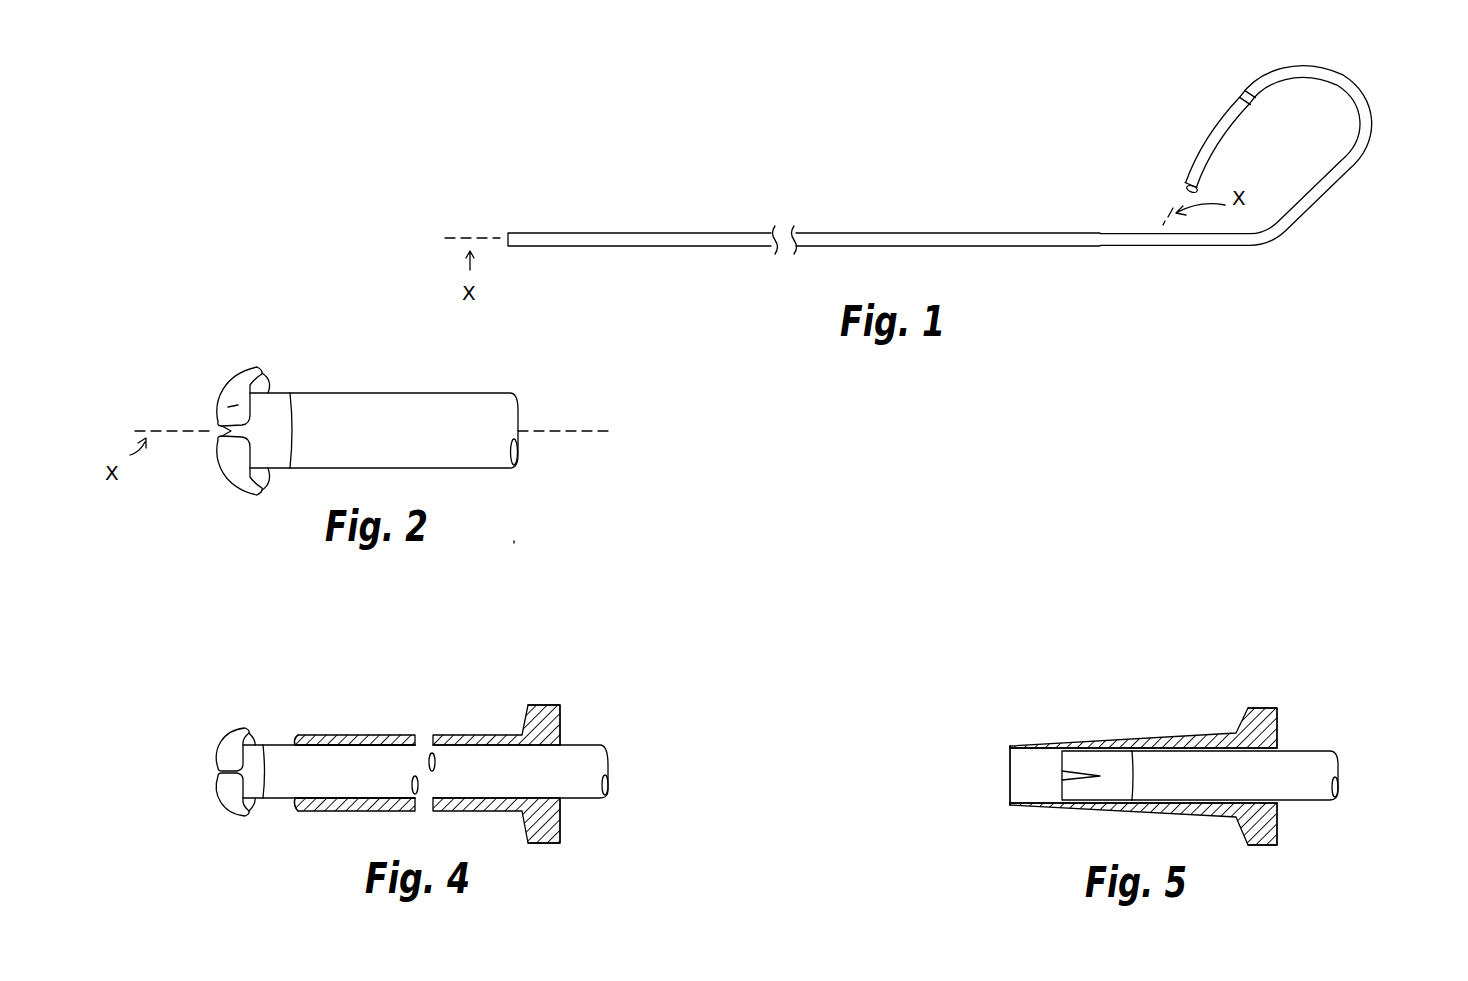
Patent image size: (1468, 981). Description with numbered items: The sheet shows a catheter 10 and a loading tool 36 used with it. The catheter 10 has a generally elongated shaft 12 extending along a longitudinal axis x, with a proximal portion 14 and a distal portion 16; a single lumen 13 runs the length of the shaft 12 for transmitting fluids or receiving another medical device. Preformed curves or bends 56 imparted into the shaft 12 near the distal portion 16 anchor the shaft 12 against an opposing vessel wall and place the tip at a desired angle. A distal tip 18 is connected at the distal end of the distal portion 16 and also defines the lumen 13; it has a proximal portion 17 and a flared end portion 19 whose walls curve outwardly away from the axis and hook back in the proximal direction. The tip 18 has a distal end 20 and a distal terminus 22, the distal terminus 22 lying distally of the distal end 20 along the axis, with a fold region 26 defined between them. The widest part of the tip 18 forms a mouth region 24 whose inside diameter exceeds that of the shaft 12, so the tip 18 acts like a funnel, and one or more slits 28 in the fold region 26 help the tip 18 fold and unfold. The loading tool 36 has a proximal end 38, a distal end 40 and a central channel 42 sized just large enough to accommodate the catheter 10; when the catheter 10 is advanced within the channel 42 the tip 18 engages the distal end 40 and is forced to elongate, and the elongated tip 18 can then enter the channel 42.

In FIG. 1, the catheter 10 is at (828, 132).
In FIG. 4, the catheter 10 is at (615, 742).
In FIG. 5, the catheter 10 is at (1333, 735).
In FIG. 1, the shaft 12 is at (925, 232).
In FIG. 2, the shaft 12 is at (383, 393).
In FIG. 4, the shaft 12 is at (425, 771).
In FIG. 5, the shaft 12 is at (1235, 775).
In FIG. 1, the lumen 13 is at (508, 247).
In FIG. 2, the lumen 13 is at (518, 450).
In FIG. 1, the proximal portion 14 is at (530, 230).
In FIG. 2, the distal portion 16 is at (348, 392).
In FIG. 2, the proximal portion 17 is at (278, 470).
In FIG. 1, the distal tip 18 is at (1178, 180).
In FIG. 2, the distal tip 18 is at (222, 500).
In FIG. 4, the distal tip 18 is at (222, 805).
In FIG. 5, the distal tip 18 is at (1086, 790).
In FIG. 2, the end portion 19 is at (245, 495).
In FIG. 2, the distal end 20 is at (268, 385).
In FIG. 2, the distal terminus 22 is at (215, 405).
In FIG. 2, the mouth region 24 is at (237, 370).
In FIG. 2, the fold region 26 is at (235, 398).
In FIG. 2, the slits 28 is at (220, 445).
In FIG. 4, the loading tool 36 is at (460, 728).
In FIG. 5, the loading tool 36 is at (1170, 728).
In FIG. 4, the proximal end 38 is at (565, 730).
In FIG. 5, the proximal end 38 is at (1280, 725).
In FIG. 4, the distal end 40 is at (295, 740).
In FIG. 5, the distal end 40 is at (1010, 745).
In FIG. 4, the central channel 42 is at (370, 735).
In FIG. 5, the central channel 42 is at (1042, 756).
In FIG. 1, the curves or bends 56 is at (1370, 140).